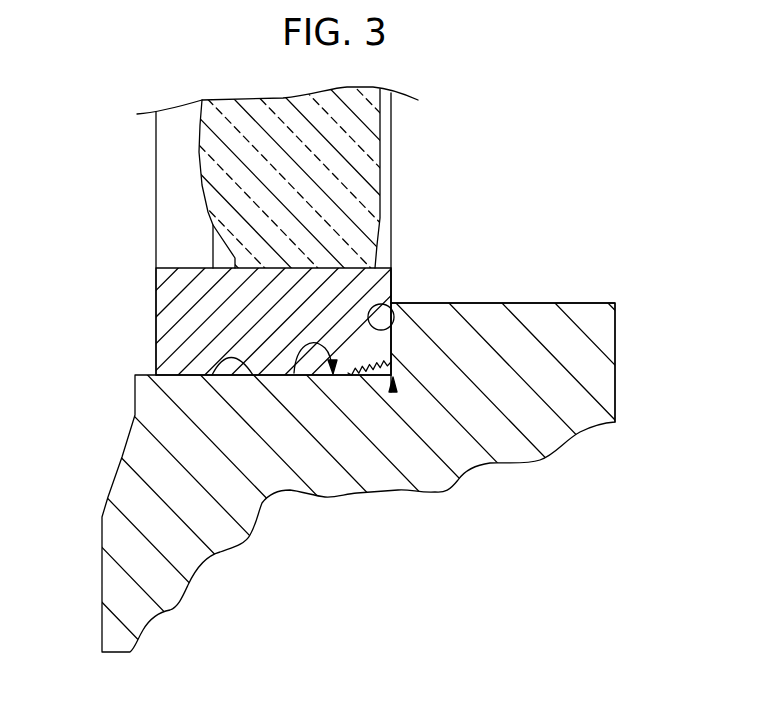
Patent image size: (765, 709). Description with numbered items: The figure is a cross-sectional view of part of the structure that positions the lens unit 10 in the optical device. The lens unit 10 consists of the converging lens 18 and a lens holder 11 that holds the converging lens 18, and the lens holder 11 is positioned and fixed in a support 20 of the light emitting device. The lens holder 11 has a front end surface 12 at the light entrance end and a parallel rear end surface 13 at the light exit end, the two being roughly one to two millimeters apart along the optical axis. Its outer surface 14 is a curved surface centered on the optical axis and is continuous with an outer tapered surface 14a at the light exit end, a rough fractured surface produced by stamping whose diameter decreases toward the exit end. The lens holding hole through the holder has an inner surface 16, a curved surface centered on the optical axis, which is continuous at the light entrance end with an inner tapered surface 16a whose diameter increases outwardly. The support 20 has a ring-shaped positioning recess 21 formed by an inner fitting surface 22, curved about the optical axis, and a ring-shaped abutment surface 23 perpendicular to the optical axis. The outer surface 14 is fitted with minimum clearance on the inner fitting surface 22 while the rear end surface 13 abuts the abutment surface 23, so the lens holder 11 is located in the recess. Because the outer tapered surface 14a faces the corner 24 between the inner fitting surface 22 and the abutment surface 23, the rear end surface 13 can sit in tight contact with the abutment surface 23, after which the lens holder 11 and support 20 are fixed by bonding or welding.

The lens unit 10 is at (427, 143).
The lens holder 11 is at (157, 313).
The front end surface 12 is at (155, 352).
The rear end surface 13 is at (393, 280).
The outer surface 14 is at (192, 376).
The outer tapered surface 14a is at (363, 376).
The inner surface 16 is at (318, 268).
The inner tapered surface 16a is at (175, 295).
The converging lens 18 is at (210, 146).
The support 20 is at (548, 327).
The positioning recess 21 is at (294, 373).
The inner fitting surface 22 is at (212, 375).
The abutment surface 23 is at (393, 298).
The corner 24 is at (393, 392).